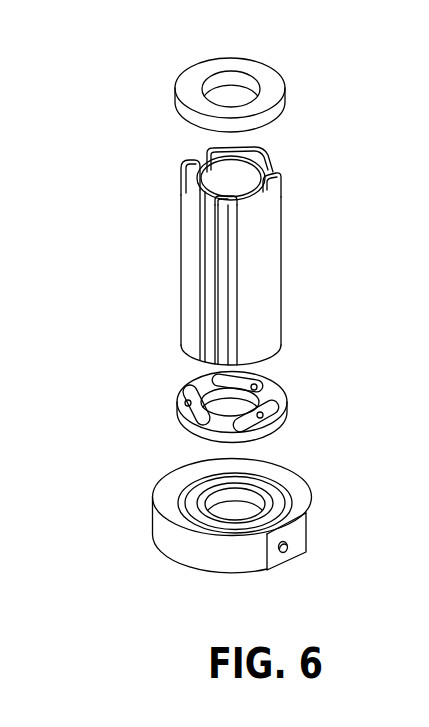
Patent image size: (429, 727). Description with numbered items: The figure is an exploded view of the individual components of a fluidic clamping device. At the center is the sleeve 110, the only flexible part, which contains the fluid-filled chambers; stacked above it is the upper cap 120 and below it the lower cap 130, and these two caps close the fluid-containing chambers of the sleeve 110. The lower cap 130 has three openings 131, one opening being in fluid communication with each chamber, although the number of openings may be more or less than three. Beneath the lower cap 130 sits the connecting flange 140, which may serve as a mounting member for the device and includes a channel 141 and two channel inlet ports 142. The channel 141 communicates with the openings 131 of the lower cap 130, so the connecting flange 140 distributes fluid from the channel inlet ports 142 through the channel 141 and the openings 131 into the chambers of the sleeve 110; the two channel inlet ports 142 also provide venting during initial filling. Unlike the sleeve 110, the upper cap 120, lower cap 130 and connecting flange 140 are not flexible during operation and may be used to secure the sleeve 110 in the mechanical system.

The sleeve 110 is at (276, 264).
The upper cap 120 is at (277, 92).
The lower cap 130 is at (215, 398).
The openings 131 is at (178, 402).
The connecting flange 140 is at (230, 524).
The channel 141 is at (182, 500).
The channel inlet ports 142 is at (294, 552).